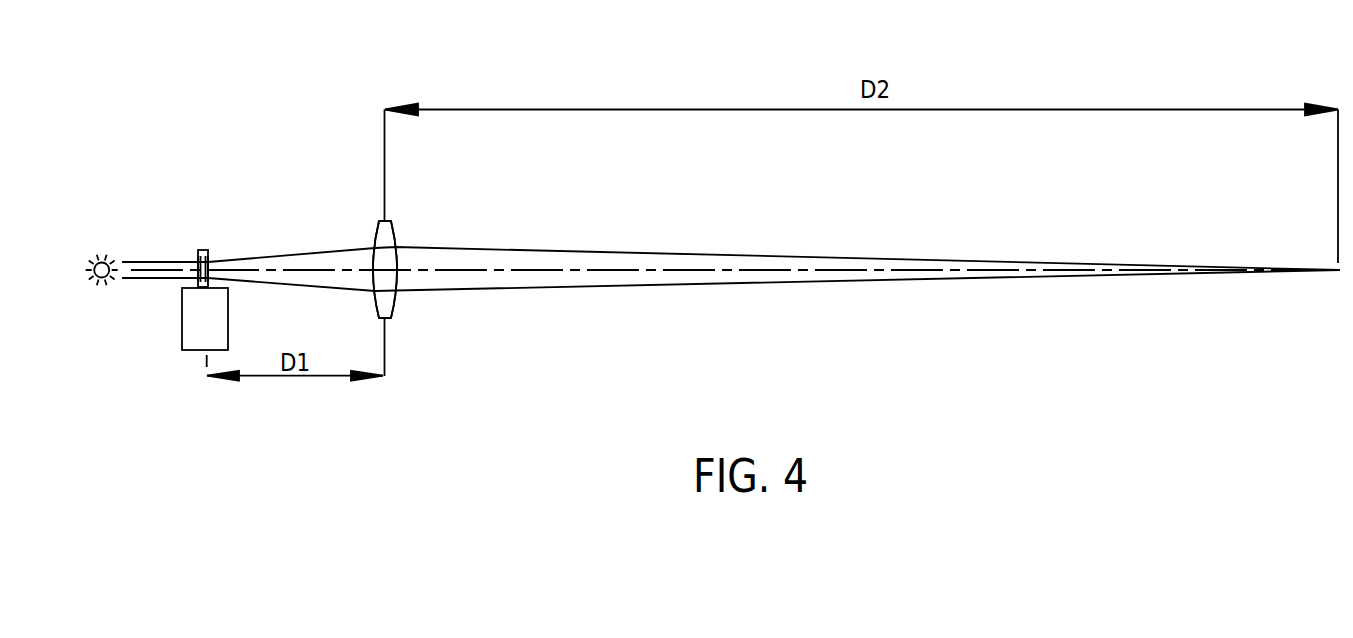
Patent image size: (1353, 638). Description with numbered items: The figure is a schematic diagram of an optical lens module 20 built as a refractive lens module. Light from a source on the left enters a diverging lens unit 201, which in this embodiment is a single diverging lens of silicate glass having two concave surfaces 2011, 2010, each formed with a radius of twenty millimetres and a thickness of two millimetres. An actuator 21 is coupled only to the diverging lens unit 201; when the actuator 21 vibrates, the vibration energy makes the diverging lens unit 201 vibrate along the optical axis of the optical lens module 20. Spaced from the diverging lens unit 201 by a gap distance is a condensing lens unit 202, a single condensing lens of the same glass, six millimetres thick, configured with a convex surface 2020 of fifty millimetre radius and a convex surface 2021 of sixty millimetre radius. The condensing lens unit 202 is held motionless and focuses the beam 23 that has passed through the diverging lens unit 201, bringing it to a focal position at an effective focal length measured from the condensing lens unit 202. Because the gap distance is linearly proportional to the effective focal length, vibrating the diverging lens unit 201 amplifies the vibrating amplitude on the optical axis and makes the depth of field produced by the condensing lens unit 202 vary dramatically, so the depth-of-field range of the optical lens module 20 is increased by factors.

The optical lens module 20 is at (188, 212).
The actuator 21 is at (195, 320).
The diverging lens unit 201 is at (214, 260).
The concave surface 2011 is at (197, 255).
The concave surface 2010 is at (212, 279).
The condensing lens unit 202 is at (383, 268).
The convex surface 2021 is at (377, 233).
The convex surface 2020 is at (393, 303).
The converging light beam 23 is at (501, 270).